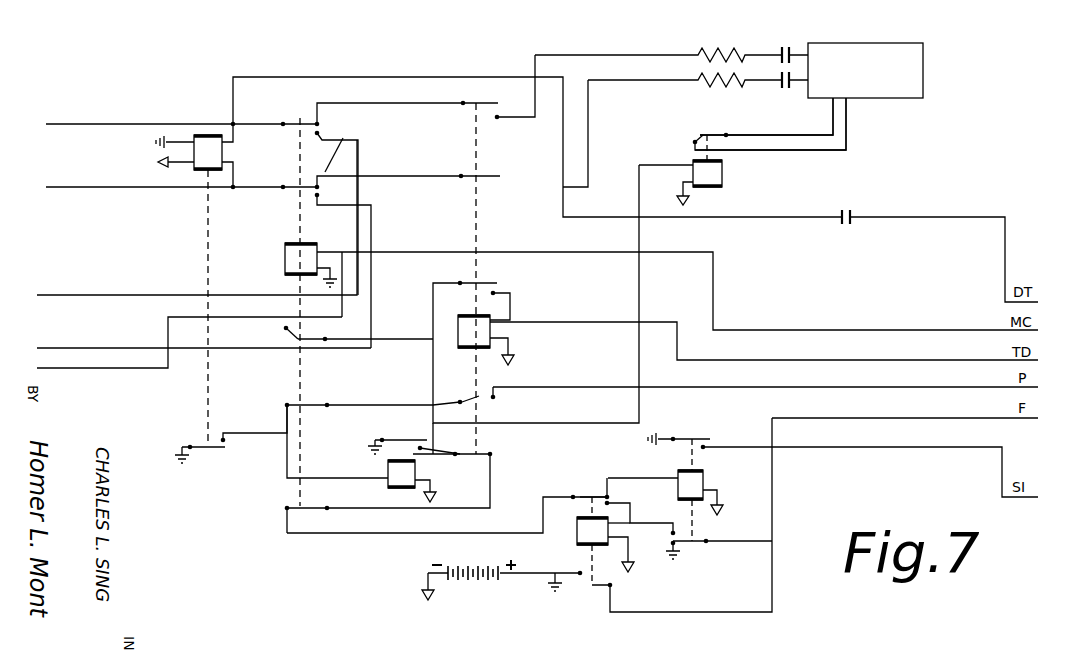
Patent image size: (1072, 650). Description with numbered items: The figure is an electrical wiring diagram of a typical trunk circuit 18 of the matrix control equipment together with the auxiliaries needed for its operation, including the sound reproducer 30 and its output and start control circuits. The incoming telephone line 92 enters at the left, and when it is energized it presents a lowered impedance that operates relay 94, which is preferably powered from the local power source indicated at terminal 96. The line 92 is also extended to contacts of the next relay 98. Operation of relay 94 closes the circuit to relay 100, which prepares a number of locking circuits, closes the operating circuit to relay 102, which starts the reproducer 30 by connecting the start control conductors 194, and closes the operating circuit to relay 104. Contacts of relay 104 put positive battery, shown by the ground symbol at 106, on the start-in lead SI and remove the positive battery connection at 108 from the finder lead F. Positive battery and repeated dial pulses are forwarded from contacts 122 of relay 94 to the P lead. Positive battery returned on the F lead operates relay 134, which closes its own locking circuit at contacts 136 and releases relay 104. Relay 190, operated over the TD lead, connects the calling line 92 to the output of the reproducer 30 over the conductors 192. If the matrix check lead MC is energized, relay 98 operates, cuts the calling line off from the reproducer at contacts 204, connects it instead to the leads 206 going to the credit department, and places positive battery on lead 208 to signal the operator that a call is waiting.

The trunk circuit 18 is at (464, 60).
The sound reproducer 30 is at (908, 36).
The incoming telephone line 92 is at (120, 124).
The relay 94 is at (224, 160).
The local power source terminal 96 is at (160, 160).
The relay 98 is at (284, 258).
The relay 100 is at (387, 471).
The relay 102 is at (708, 183).
The relay 104 is at (704, 487).
The positive battery connection 106 is at (673, 436).
The positive battery connection 108 is at (684, 556).
The contacts of relay 94 122 is at (219, 434).
The relay 134 is at (575, 533).
The contacts of relay 134 136 is at (612, 501).
The relay 190 is at (468, 345).
The conductors 192 is at (643, 68).
The start control conductors 194 is at (779, 147).
The contacts of relay 98 204 is at (328, 137).
The leads 206 is at (130, 295).
The lead 208 is at (105, 369).